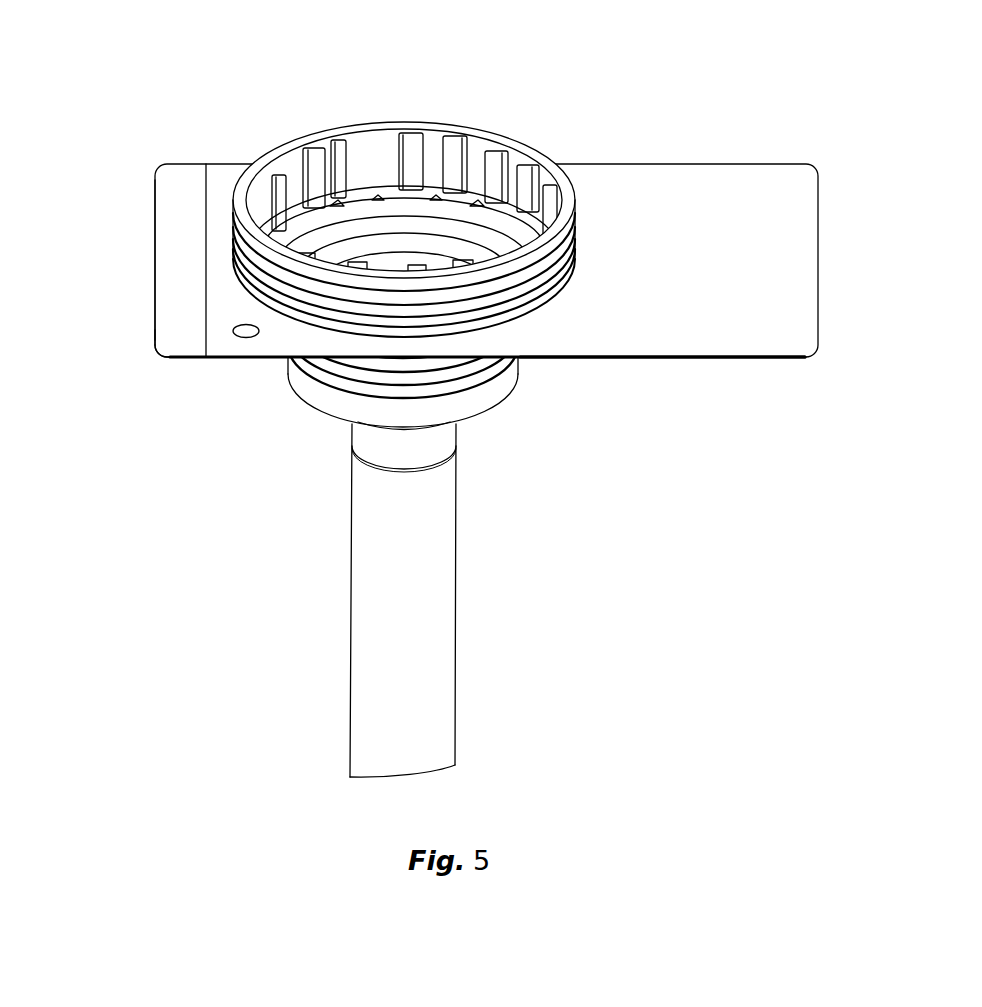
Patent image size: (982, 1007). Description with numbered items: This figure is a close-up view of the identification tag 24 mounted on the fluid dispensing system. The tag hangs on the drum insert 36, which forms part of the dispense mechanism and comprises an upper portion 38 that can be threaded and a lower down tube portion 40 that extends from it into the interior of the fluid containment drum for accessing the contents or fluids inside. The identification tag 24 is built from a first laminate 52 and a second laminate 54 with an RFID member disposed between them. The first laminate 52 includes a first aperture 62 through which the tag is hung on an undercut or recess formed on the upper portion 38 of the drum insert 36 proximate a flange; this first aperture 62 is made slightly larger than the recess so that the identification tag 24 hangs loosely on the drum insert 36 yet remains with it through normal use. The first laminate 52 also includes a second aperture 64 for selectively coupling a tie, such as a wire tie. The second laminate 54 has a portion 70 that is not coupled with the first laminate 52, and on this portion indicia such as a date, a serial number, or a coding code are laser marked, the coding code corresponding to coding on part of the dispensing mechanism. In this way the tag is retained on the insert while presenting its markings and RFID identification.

The identification tag 24 is at (686, 190).
The drum insert 36 is at (458, 255).
The upper portion 38 is at (410, 130).
The lower down tube portion 40 is at (418, 583).
The first laminate 52 is at (678, 335).
The second laminate 54 is at (166, 327).
The first aperture 62 is at (535, 303).
The second aperture 64 is at (246, 338).
The portion of second laminate 70 is at (184, 342).